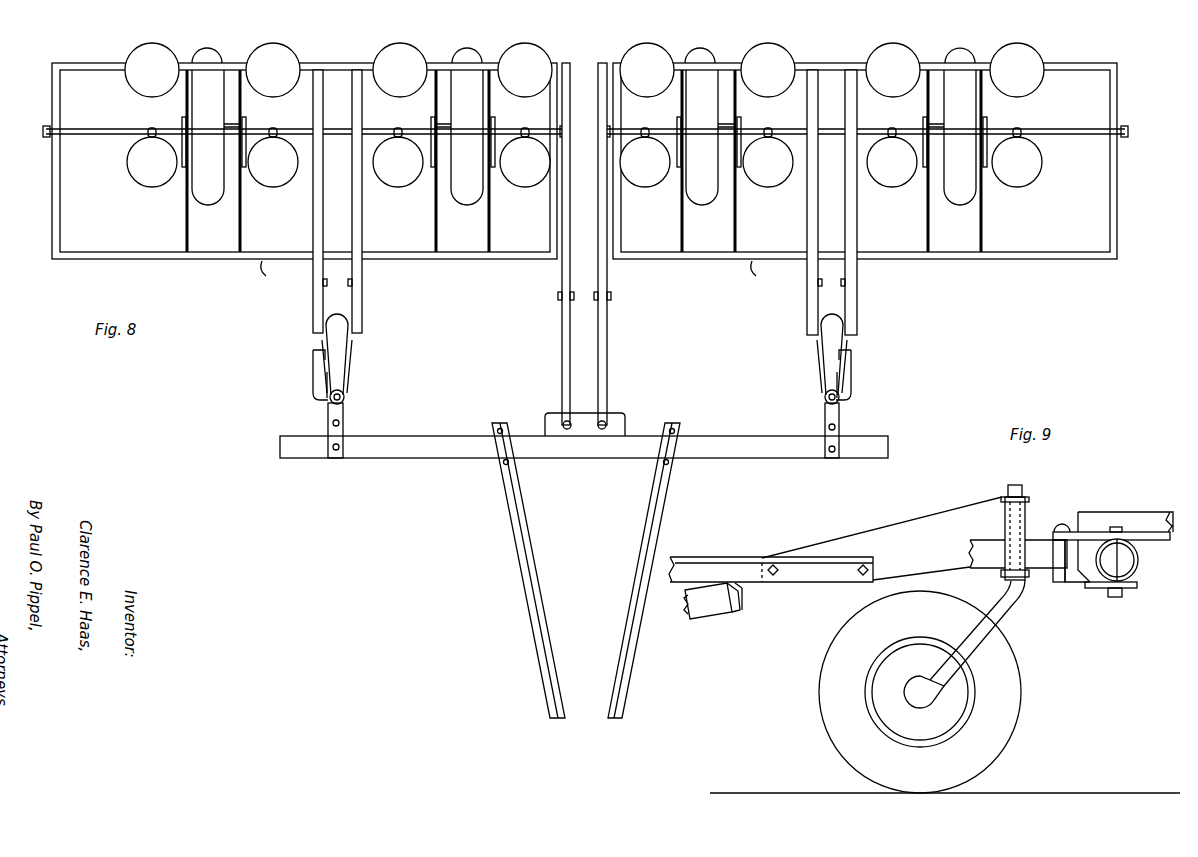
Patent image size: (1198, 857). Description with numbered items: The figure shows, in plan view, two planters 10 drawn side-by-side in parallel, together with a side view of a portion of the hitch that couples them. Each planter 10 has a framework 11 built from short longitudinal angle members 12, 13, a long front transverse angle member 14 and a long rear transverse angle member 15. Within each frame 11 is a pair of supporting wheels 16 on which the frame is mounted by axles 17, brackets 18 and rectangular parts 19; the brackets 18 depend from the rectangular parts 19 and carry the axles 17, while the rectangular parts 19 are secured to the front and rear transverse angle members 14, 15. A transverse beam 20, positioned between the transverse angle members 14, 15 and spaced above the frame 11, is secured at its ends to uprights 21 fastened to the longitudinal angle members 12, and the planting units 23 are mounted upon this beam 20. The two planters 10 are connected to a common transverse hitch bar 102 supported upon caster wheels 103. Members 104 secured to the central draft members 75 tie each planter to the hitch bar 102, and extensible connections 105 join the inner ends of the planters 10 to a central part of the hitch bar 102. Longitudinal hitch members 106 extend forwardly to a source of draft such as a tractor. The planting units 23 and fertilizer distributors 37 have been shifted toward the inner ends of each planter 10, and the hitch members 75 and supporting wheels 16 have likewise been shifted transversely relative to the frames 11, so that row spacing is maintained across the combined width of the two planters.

In FIG. 8, the planter 10 is at (346, 64).
In FIG. 8, the framework 11 is at (50, 96).
In FIG. 8, the longitudinal angle member 12 is at (50, 204).
In FIG. 8, the longitudinal angle member 13 is at (570, 190).
In FIG. 8, the front transverse angle member 14 is at (517, 273).
In FIG. 8, the rear transverse angle member 15 is at (232, 64).
In FIG. 8, the supporting wheel 16 is at (208, 204).
In FIG. 8, the axle 17 is at (236, 124).
In FIG. 8, the bracket 18 is at (182, 120).
In FIG. 8, the rectangular part 19 is at (1000, 228).
In FIG. 8, the transverse beam 20 is at (104, 128).
In FIG. 8, the upright 21 is at (45, 128).
In FIG. 8, the planting unit 23 is at (150, 178).
In FIG. 8, the fertilizer distributor 37 is at (140, 48).
In FIG. 8, the central draft member 75 is at (313, 306).
In FIG. 9, the central draft member 75 is at (710, 563).
In FIG. 8, the transverse hitch bar 102 is at (728, 432).
In FIG. 9, the transverse hitch bar 102 is at (1138, 566).
In FIG. 8, the caster wheel 103 is at (340, 345).
In FIG. 9, the caster wheel 103 is at (826, 668).
In FIG. 8, the member 104 is at (330, 370).
In FIG. 9, the member 104 is at (924, 520).
In FIG. 8, the extensible connection 105 is at (570, 285).
In FIG. 9, the extensible connection 105 is at (700, 604).
In FIG. 8, the longitudinal hitch member 106 is at (642, 524).
In FIG. 9, the longitudinal hitch member 106 is at (1160, 512).